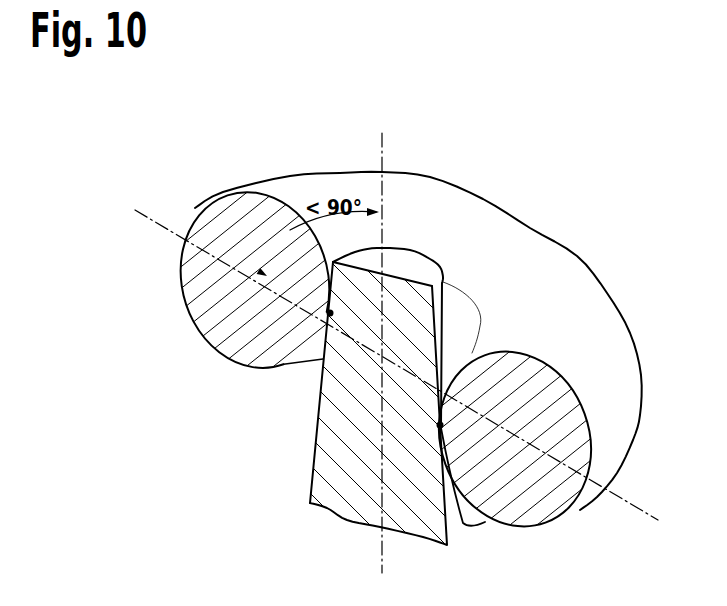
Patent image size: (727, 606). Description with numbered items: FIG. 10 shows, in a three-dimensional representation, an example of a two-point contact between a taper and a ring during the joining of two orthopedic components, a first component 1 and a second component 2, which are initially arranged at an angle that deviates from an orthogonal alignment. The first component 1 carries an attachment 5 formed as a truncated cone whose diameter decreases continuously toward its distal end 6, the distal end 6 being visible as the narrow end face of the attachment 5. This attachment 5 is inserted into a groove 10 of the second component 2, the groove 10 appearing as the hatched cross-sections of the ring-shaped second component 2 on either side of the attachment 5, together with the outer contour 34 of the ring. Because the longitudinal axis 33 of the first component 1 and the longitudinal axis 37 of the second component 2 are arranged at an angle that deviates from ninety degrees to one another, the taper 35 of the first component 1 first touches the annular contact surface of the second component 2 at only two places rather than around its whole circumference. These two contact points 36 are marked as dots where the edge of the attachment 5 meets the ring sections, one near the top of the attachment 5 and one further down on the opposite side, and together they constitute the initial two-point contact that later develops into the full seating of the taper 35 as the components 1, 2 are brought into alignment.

The first component 1 is at (356, 382).
The second component 2 is at (500, 262).
The attachment 5 is at (372, 428).
The distal end 6 is at (407, 243).
The groove 10 is at (315, 370).
The longitudinal axis of component 1 33 is at (383, 146).
The outer contour of wire 34 is at (578, 250).
The taper 35 is at (473, 527).
The contact points 36 is at (317, 320).
The longitudinal axis of component 2 37 is at (614, 505).